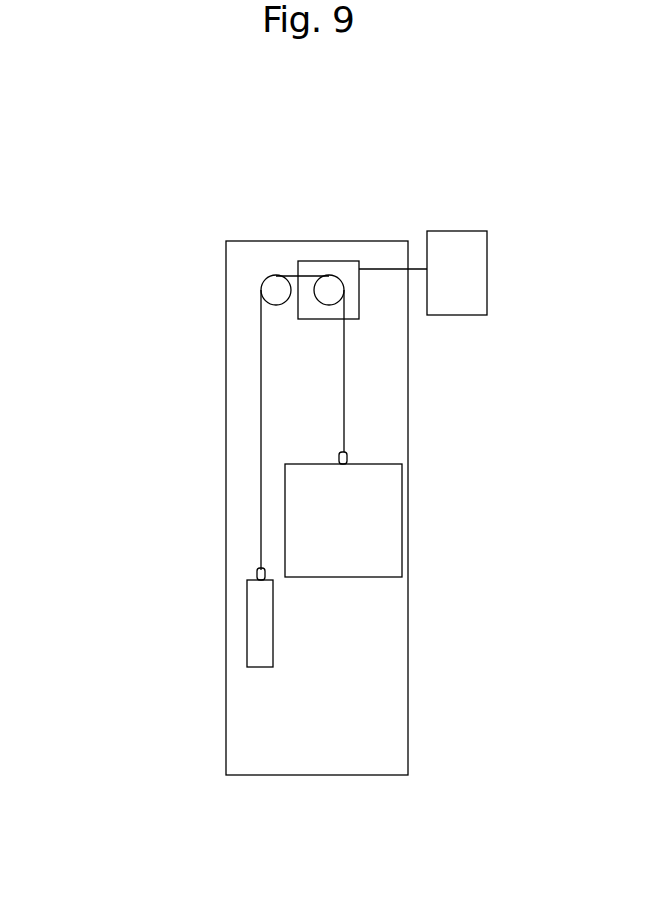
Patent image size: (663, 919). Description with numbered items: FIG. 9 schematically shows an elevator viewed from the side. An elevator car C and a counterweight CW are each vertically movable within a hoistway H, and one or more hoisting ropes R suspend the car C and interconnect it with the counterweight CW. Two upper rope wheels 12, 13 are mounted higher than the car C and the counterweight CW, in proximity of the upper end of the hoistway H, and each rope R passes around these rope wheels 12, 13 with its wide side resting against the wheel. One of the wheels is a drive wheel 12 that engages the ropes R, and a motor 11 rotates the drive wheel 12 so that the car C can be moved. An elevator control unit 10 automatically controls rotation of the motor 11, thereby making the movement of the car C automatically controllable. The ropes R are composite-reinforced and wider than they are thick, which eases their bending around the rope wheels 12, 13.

The elevator control unit 10 is at (474, 290).
The motor 11 is at (340, 261).
The drive wheel 12 is at (342, 298).
The rope wheel 13 is at (277, 287).
The hoisting rope R is at (260, 352).
The elevator car C is at (357, 536).
The counterweight CW is at (247, 605).
The hoistway H is at (317, 508).